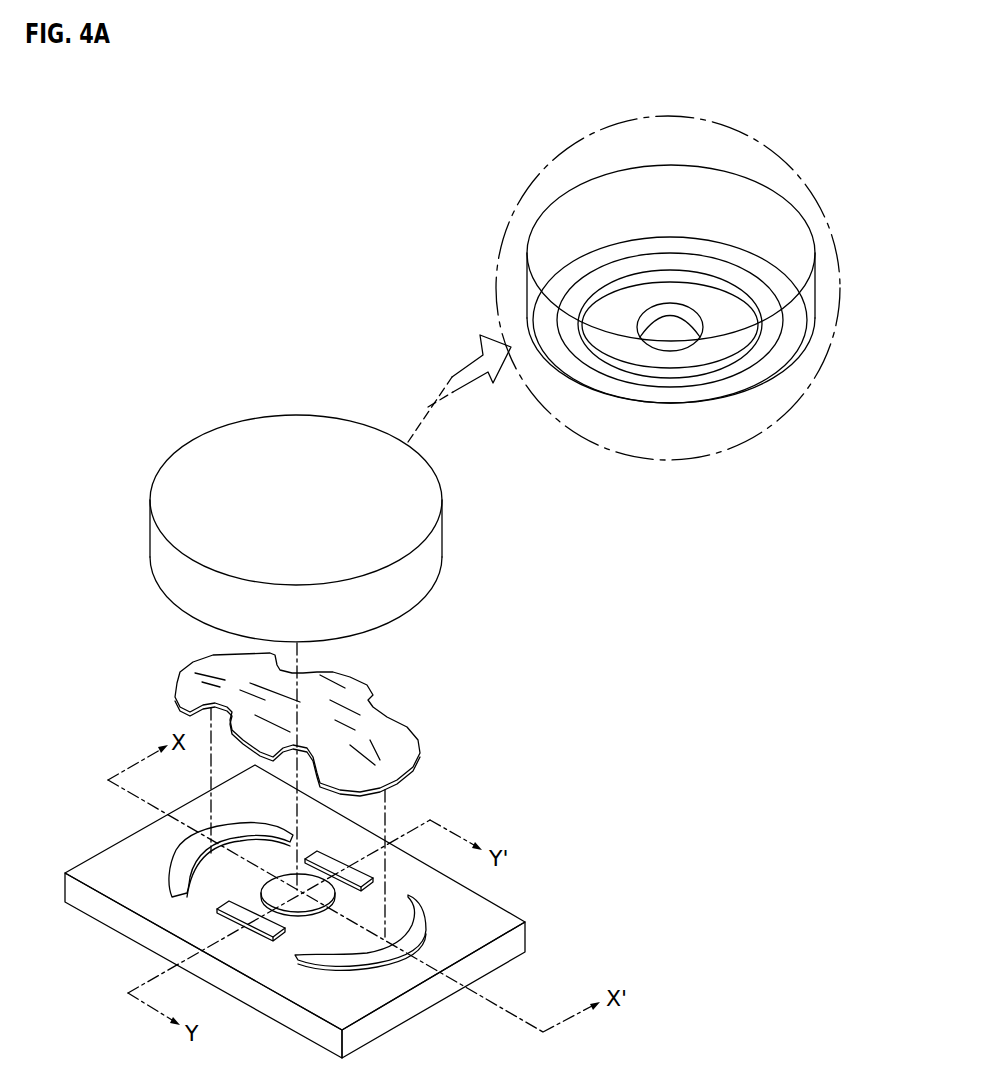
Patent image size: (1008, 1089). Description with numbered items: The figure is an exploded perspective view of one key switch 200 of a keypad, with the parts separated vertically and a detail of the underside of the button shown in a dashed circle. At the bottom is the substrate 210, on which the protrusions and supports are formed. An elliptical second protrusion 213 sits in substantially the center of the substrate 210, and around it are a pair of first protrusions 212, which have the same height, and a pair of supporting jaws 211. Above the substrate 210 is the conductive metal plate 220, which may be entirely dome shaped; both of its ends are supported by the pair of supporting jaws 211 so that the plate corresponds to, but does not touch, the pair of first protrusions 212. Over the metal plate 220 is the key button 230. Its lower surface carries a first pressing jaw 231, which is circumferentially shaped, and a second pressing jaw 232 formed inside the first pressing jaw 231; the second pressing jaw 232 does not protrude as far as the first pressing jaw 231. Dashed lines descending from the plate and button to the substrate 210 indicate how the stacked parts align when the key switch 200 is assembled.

The key switch 200 is at (277, 368).
The substrate 210 is at (490, 915).
The supporting jaws 211 is at (298, 957).
The first protrusions 212 is at (278, 878).
The second protrusion 213 is at (413, 948).
The metal plate 220 is at (410, 745).
The key button 230 is at (438, 543).
The first pressing jaw 231 is at (777, 350).
The second pressing jaw 232 is at (690, 340).